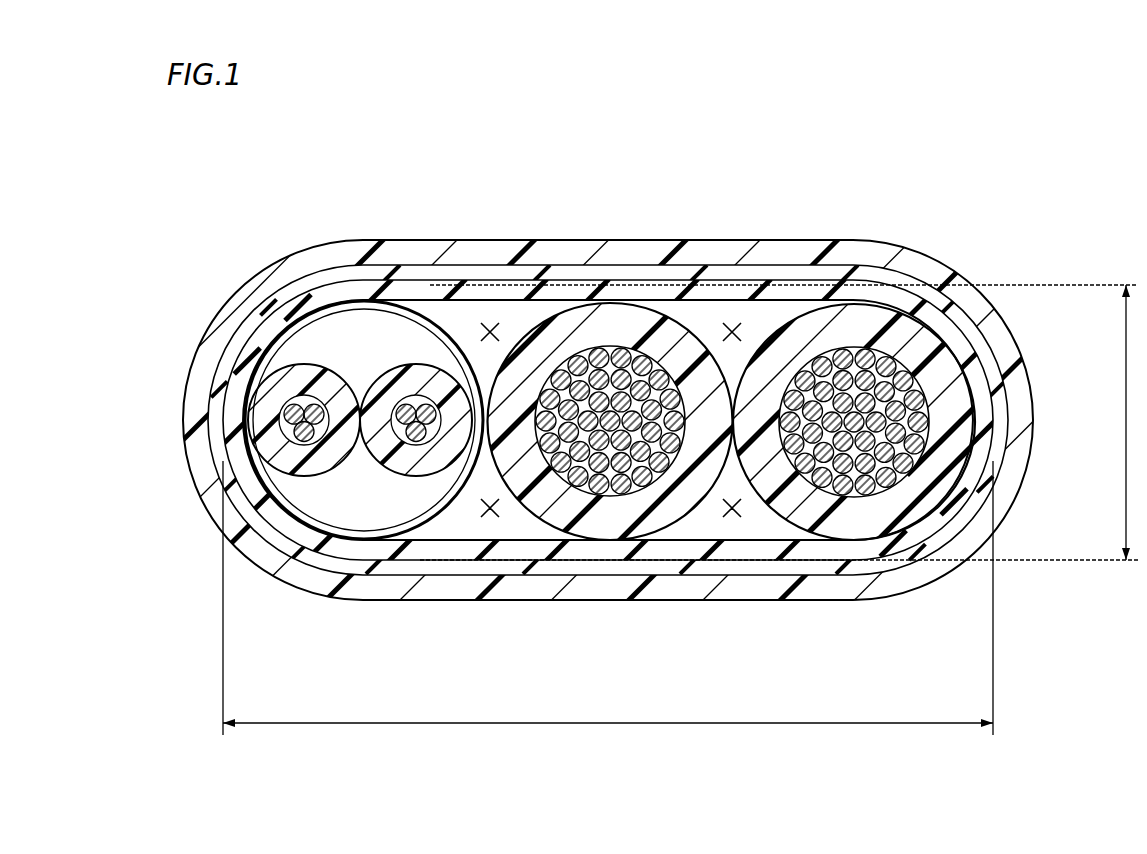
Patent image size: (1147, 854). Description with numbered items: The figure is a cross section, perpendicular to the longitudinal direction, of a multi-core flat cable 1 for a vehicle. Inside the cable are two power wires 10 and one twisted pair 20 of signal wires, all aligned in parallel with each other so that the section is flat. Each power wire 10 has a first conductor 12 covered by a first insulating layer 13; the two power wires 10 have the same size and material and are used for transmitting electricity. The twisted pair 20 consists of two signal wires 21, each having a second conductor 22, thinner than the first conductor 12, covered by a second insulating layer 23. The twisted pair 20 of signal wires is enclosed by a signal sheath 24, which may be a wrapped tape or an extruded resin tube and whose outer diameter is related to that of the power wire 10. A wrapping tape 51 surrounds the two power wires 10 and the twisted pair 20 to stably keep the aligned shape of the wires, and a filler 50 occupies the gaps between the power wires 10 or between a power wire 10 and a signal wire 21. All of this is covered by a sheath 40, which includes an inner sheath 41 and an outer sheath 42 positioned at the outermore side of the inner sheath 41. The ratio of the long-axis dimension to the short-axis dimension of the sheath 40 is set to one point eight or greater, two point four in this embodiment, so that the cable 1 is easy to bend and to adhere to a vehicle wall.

The multi-core flat cable 1 is at (918, 190).
The power wire 10 is at (701, 333).
The first conductor 12 is at (592, 362).
The first insulating layer 13 is at (613, 315).
The twisted pair of signal wires 20 is at (457, 332).
The signal wire 21 is at (323, 358).
The second conductor 22 is at (313, 407).
The second insulating layer 23 is at (270, 388).
The signal sheath 24 is at (406, 303).
The sheath 40 is at (942, 260).
The inner sheath 41 is at (996, 445).
The outer sheath 42 is at (1007, 488).
The filler 50 is at (731, 505).
The wrapping tape 51 is at (975, 366).